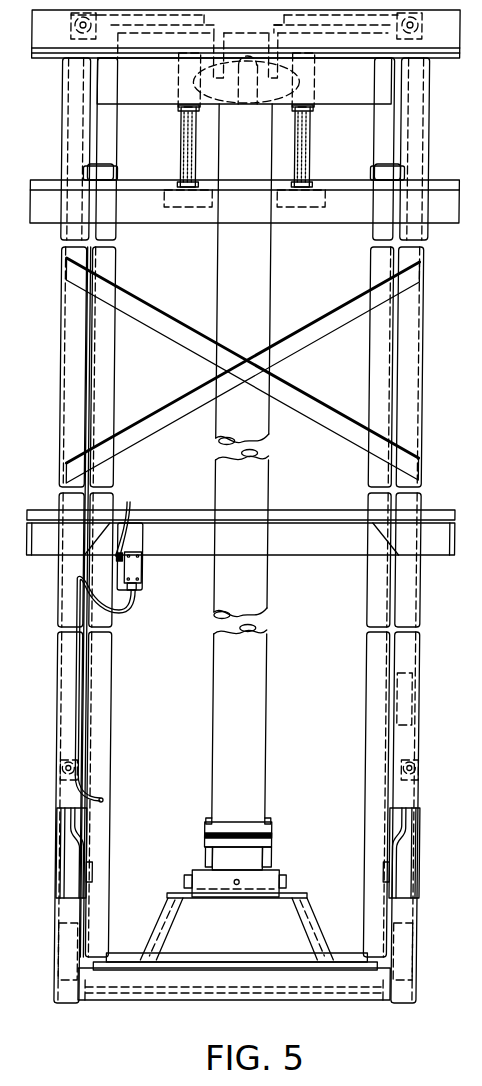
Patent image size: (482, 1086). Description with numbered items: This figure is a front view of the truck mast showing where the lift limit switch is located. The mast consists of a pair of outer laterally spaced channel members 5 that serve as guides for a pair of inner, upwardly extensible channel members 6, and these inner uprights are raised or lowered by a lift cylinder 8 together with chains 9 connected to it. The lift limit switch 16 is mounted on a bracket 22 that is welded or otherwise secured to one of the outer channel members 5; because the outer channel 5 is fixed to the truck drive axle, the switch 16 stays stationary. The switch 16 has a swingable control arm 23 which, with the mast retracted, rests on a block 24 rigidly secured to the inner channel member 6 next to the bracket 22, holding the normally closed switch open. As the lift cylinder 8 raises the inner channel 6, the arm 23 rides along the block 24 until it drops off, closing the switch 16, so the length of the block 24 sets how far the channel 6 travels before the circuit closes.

The outer channel member 5 is at (68, 296).
The inner channel member 6 is at (110, 265).
The lift cylinder 8 is at (220, 262).
The chains 9 is at (181, 145).
The lift limit switch 16 is at (148, 563).
The bracket 22 is at (144, 538).
The control arm 23 is at (128, 522).
The block 24 is at (130, 608).